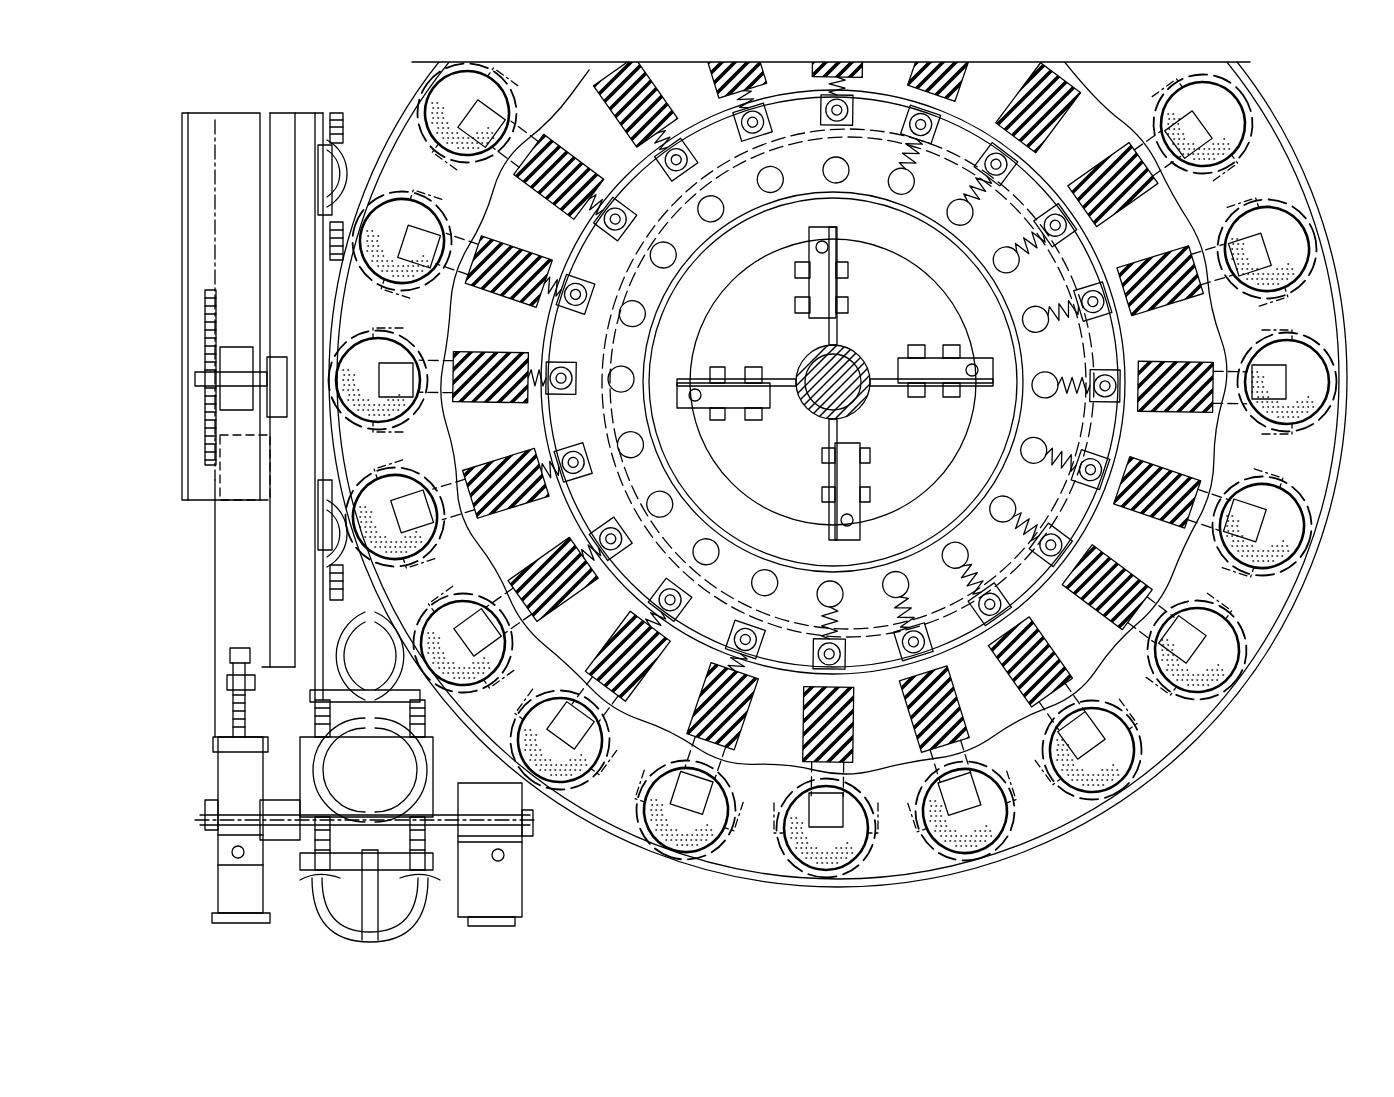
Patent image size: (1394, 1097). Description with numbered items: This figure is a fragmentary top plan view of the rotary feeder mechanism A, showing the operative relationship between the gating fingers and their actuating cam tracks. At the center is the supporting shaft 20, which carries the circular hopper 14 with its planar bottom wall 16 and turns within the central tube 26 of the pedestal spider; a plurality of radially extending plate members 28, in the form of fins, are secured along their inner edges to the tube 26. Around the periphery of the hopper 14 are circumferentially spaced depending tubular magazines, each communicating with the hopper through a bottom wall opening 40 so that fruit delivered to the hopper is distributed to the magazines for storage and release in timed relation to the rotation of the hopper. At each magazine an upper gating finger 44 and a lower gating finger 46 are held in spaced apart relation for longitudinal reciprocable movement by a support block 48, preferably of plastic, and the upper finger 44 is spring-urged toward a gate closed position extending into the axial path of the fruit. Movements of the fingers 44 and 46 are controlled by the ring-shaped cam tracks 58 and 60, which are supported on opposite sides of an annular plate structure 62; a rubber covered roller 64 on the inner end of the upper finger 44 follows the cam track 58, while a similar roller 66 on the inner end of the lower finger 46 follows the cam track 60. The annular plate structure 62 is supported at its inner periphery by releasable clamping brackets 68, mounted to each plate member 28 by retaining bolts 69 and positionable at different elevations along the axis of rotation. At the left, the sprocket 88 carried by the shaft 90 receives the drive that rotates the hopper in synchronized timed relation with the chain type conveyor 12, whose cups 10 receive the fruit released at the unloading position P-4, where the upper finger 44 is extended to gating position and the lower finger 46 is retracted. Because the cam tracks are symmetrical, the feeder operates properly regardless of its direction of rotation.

The cups 10 is at (425, 935).
The chain type conveyor 12 is at (315, 718).
The circular hopper 14 is at (1308, 580).
The planar bottom wall 16 is at (440, 313).
The supporting shaft 20 is at (815, 412).
The central tube 26 is at (860, 352).
The plate members 28 is at (840, 332).
The bottom wall opening 40 is at (475, 160).
The upper gating finger 44 is at (420, 200).
The lower gating finger 46 is at (470, 240).
The support block 48 is at (560, 245).
The cam track 58 is at (865, 200).
The cam track 60 is at (810, 140).
The annular plate structure 62 is at (790, 525).
The roller 64 is at (665, 170).
The roller 66 is at (695, 200).
The clamping brackets 68 is at (808, 232).
The retaining bolts 69 is at (848, 270).
The sprocket 88 is at (205, 310).
The shaft 90 is at (220, 345).
The rotary feeder mechanism A is at (1232, 712).
The unloading position P-4 is at (300, 345).